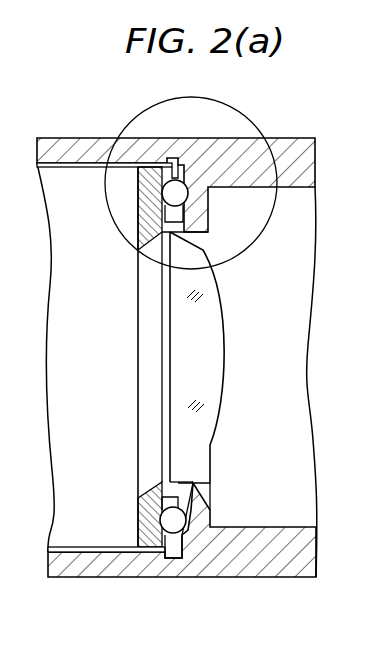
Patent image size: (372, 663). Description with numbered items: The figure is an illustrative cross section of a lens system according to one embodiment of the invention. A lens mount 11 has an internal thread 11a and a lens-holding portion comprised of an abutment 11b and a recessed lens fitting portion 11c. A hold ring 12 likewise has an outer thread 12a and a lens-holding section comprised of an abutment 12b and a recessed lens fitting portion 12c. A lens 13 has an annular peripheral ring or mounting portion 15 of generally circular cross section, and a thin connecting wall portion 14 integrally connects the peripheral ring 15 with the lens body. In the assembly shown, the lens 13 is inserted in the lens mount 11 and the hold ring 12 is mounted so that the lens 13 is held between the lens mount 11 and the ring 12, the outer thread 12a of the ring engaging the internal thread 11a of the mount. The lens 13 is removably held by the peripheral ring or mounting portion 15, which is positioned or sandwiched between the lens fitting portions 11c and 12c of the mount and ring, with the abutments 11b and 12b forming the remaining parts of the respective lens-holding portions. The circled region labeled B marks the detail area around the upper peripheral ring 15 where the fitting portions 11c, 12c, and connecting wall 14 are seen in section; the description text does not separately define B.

The lens mount 11 is at (277, 552).
The internal thread 11a is at (106, 553).
The abutment 11b is at (188, 229).
The recessed lens fitting portion 11c is at (185, 533).
The hold ring 12 is at (144, 367).
The outer thread 12a is at (154, 163).
The abutment 12b is at (172, 227).
The recessed lens fitting portion 12c is at (162, 537).
The lens 13 is at (210, 422).
The thin connecting wall portion 14 is at (163, 505).
The annular peripheral ring or mounting portion 15 is at (178, 192).
The detail circle B is at (250, 112).